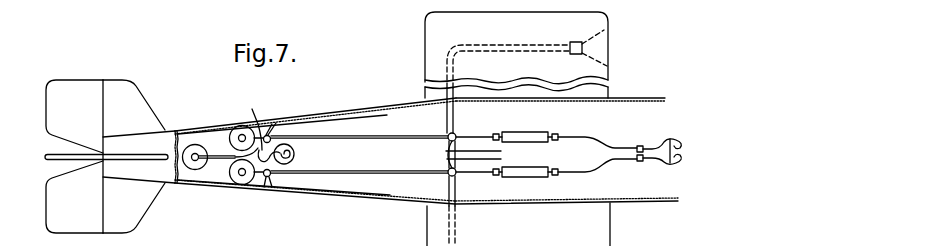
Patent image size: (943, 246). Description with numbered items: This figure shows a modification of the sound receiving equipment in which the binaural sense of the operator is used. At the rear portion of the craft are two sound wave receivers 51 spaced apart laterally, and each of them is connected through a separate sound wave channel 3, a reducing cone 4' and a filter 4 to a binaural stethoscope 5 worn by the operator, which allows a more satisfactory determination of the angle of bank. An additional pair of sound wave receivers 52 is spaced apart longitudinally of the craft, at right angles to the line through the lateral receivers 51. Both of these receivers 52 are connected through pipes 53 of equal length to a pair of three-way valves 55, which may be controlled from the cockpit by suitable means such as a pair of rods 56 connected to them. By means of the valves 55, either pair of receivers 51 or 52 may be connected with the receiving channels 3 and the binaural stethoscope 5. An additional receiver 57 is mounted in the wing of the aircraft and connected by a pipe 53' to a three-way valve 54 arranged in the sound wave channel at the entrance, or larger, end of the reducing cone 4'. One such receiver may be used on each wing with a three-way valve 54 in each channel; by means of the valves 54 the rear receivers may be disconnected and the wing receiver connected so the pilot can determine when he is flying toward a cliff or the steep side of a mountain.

The sound wave channel 3 is at (402, 135).
The filter 4 is at (571, 157).
The reducing cone 4' is at (478, 155).
The binaural stethoscope 5 is at (665, 142).
The sound wave receivers 51 is at (232, 165).
The sound wave receivers 52 is at (195, 170).
The pipes 53 is at (249, 122).
The pipe 53' is at (508, 134).
The three-way valve 54 is at (455, 133).
The three-way valves 55 is at (277, 123).
The rods 56 is at (350, 116).
The receiver 57 is at (603, 29).